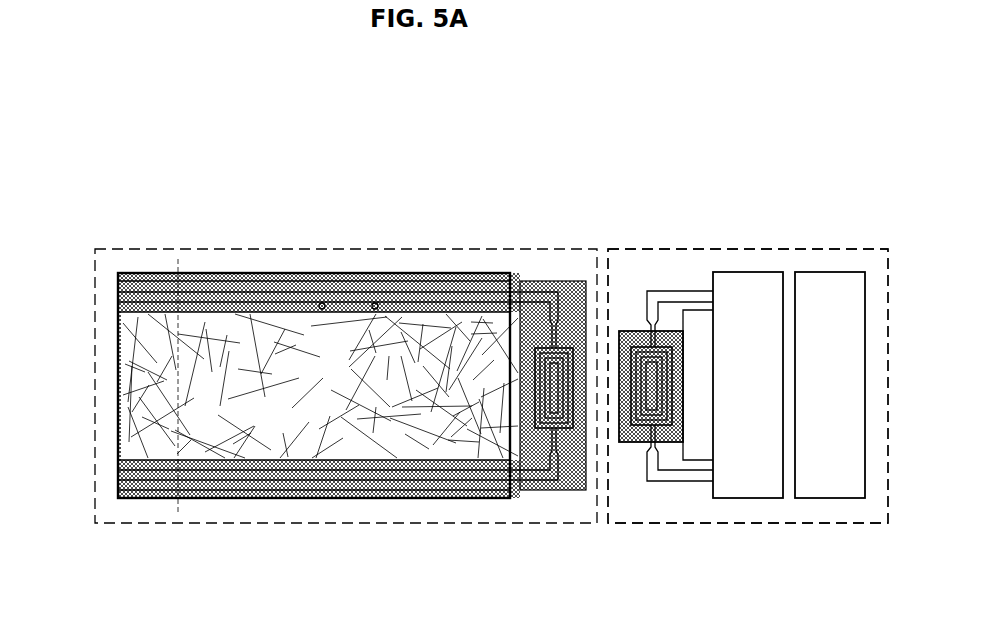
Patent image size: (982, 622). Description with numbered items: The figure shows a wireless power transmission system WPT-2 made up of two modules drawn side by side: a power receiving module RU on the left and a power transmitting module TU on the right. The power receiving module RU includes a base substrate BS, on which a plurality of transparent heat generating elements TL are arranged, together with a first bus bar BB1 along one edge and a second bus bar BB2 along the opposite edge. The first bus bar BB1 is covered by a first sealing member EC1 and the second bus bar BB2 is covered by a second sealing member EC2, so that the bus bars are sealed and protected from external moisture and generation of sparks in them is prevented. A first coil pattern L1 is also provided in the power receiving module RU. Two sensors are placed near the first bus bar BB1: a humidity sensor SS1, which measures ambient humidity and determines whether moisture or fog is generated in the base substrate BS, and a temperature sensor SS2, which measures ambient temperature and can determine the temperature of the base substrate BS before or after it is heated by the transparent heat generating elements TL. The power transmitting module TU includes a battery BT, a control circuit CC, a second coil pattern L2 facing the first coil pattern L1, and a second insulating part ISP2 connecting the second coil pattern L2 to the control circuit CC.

The base substrate BS is at (118, 274).
The power receiving module RU is at (500, 248).
The first sealing member EC1 is at (143, 290).
The first bus bar BB1 is at (260, 288).
The second sealing member EC2 is at (148, 493).
The second bus bar BB2 is at (258, 476).
The humidity sensor SS1 is at (322, 302).
The temperature sensor SS2 is at (375, 302).
The transparent heat generating elements TL is at (135, 368).
The first coil pattern L1 is at (540, 492).
The power transmitting module TU is at (835, 248).
The wireless power transmission system WPT-2 is at (752, 164).
The control circuit CC is at (745, 499).
The battery BT is at (830, 499).
The second coil pattern L2 is at (631, 444).
The second insulating part ISP2 is at (634, 330).